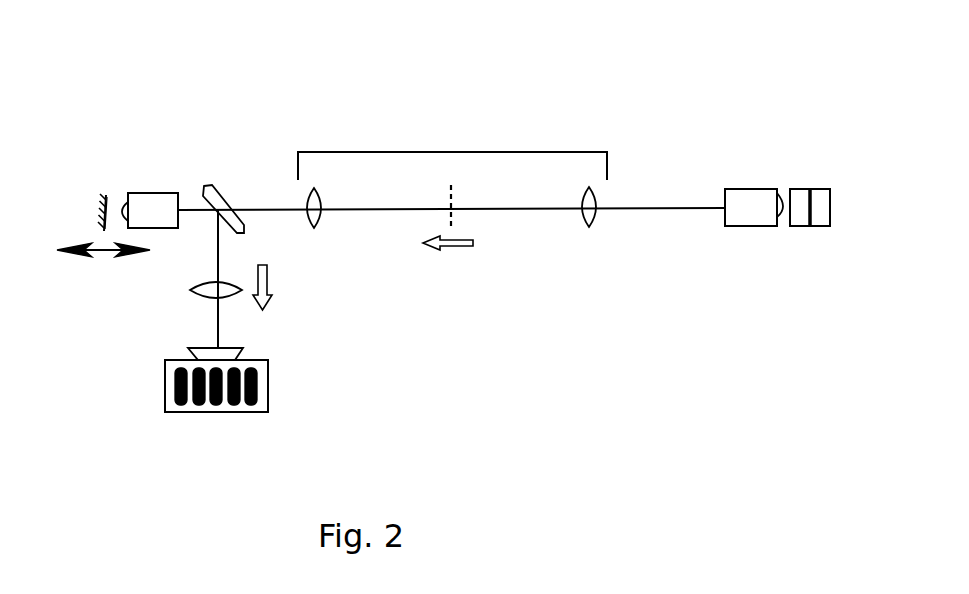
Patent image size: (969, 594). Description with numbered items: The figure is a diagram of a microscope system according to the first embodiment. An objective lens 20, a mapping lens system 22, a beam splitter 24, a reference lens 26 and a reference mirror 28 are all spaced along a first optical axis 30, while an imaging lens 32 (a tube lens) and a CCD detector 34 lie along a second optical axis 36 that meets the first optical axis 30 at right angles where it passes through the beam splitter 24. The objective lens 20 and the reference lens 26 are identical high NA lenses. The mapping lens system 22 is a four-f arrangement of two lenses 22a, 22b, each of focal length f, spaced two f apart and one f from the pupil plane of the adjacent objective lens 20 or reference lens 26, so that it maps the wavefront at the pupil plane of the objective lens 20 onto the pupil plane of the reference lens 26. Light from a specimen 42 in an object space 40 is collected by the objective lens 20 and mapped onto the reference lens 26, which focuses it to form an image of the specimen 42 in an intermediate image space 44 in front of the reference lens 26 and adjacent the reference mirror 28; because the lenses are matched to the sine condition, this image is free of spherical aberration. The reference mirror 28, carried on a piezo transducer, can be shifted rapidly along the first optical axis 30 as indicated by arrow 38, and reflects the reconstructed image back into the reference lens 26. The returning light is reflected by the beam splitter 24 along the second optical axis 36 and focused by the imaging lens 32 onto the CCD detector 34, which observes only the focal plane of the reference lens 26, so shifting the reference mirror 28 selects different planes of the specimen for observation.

The objective lens 20 is at (740, 215).
The mapping lens system 22 is at (518, 148).
The lens 22a is at (590, 226).
The lens 22b is at (315, 226).
The beam splitter 24 is at (207, 188).
The reference lens 26 is at (168, 200).
The reference mirror 28 is at (105, 197).
The first optical axis 30 is at (640, 207).
The imaging lens 32 is at (230, 295).
The CCD detector 34 is at (190, 408).
The second optical axis 36 is at (217, 315).
The arrow 38 is at (105, 252).
The object space 40 is at (817, 192).
The specimen 42 is at (811, 224).
The intermediate image space 44 is at (112, 207).